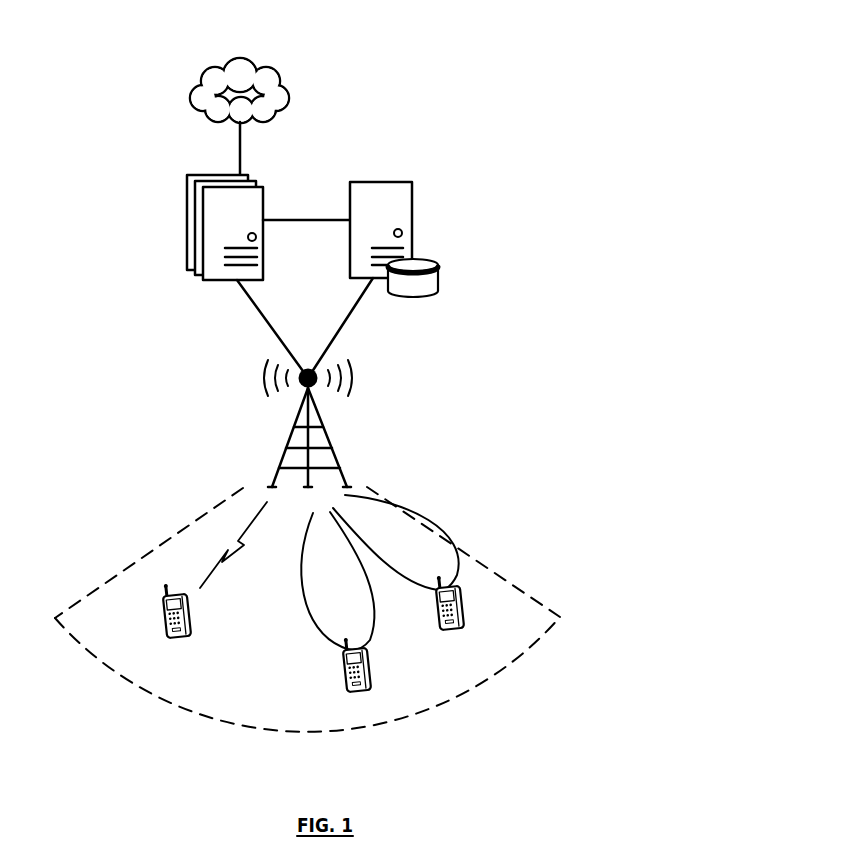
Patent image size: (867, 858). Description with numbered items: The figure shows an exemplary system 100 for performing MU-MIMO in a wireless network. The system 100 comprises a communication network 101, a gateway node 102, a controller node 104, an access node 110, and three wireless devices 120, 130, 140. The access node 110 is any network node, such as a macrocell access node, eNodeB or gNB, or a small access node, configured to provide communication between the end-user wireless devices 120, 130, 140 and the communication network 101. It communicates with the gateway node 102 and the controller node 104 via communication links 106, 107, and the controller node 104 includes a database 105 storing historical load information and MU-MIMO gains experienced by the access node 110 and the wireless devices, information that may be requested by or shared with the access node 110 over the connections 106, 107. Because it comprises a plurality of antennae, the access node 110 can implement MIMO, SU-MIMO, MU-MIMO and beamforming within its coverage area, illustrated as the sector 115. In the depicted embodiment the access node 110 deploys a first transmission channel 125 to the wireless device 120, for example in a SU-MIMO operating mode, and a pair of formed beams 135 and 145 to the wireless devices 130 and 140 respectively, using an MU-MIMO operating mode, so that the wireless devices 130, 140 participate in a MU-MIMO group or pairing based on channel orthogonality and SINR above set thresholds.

The system 100 is at (419, 42).
The communication network 101 is at (257, 104).
The gateway node 102 is at (206, 175).
The controller node 104 is at (412, 182).
The database 105 is at (436, 262).
The communication link 106 is at (347, 314).
The communication link 107 is at (253, 307).
The access node 110 is at (288, 453).
The sector 115 is at (162, 697).
The wireless device 120 is at (162, 598).
The first transmission channel 125 is at (220, 552).
The wireless device 130 is at (373, 673).
The formed beam 135 is at (355, 607).
The wireless device 140 is at (465, 603).
The formed beam 145 is at (428, 564).